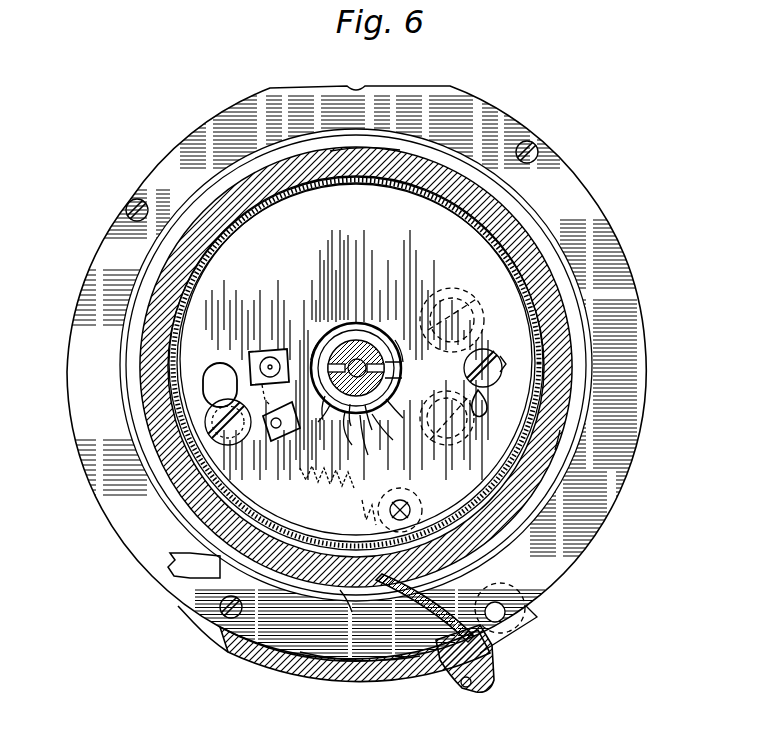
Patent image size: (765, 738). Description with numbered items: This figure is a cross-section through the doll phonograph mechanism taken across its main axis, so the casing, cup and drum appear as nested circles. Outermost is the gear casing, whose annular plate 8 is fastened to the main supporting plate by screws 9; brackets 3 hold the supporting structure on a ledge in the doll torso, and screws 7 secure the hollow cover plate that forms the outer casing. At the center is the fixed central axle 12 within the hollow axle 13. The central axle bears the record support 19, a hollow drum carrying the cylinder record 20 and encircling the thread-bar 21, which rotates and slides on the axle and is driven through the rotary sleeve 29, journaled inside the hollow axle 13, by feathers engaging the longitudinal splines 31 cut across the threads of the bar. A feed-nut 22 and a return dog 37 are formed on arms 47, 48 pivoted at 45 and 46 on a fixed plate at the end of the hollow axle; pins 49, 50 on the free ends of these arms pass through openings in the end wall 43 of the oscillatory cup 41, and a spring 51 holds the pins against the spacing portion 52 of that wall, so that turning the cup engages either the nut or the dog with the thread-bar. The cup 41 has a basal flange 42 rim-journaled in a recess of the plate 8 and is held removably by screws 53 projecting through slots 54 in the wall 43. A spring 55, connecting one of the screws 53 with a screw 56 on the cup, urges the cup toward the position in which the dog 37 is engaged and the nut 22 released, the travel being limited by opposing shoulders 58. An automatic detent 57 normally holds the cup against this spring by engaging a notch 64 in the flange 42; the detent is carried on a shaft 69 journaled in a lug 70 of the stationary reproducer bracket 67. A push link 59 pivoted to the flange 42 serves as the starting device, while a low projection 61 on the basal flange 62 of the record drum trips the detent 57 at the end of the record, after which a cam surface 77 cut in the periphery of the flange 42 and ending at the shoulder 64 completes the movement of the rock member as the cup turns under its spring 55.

The brackets 3 is at (345, 412).
The screws 7 is at (502, 360).
The annular plate 8 is at (410, 514).
The screws 9 is at (222, 615).
The central axle 12 is at (362, 410).
The hollow axle 13 is at (402, 364).
The record support 19 is at (458, 214).
The record 20 is at (548, 253).
The thread-bar 21 is at (344, 344).
The feed-nut 22 is at (366, 330).
The rotary sleeve 29 is at (393, 408).
The splines 31 is at (372, 340).
The dog 37 is at (370, 455).
The cup 41 is at (447, 232).
The basal flange 42 is at (532, 208).
The end wall 43 is at (347, 345).
The pivot 45 is at (458, 300).
The pivot 46 is at (448, 445).
The arm 47 is at (276, 305).
The arm 48 is at (305, 482).
The pin 49 is at (265, 350).
The pin 50 is at (268, 436).
The spring 51 is at (240, 450).
The spacing portion 52 is at (262, 350).
The screws 53 is at (206, 424).
The slots 54 is at (480, 418).
The spring 55 is at (372, 520).
The screw 56 is at (412, 512).
The detent 57 is at (406, 594).
The shoulders 58 is at (405, 142).
The push link 59 is at (186, 578).
The projection 61 is at (484, 584).
The basal flange 62 is at (562, 440).
The notch 64 is at (348, 600).
The reproducer bracket 67 is at (332, 684).
The shaft 69 is at (500, 680).
The lug 70 is at (464, 690).
The cam surface 77 is at (366, 684).